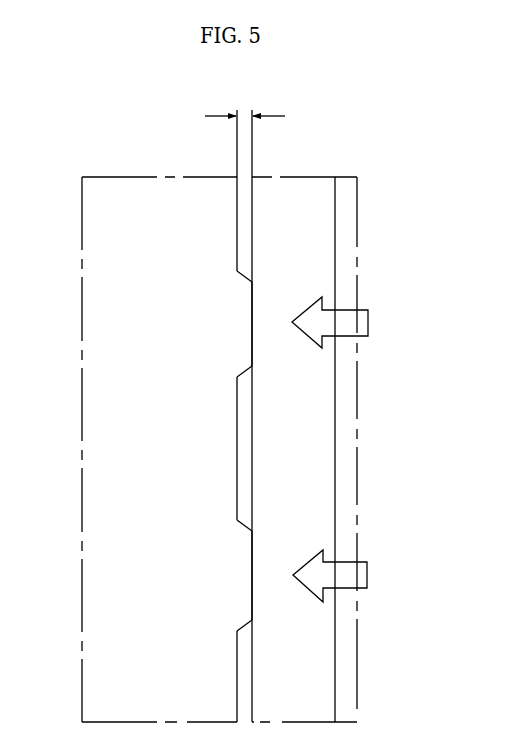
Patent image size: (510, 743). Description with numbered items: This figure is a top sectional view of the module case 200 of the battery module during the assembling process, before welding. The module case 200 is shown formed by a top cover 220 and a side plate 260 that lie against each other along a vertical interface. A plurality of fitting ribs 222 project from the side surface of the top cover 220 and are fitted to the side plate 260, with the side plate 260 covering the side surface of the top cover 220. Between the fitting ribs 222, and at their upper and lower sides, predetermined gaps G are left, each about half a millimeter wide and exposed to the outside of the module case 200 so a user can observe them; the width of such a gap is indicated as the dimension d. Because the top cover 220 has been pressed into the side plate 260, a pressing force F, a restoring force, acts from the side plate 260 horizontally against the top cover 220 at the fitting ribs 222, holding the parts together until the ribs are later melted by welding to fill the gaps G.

The module case 200 is at (204, 413).
The top cover 220 is at (163, 200).
The side plate 260 is at (293, 200).
The fitting rib 222 is at (245, 310).
The predetermined gap G is at (245, 221).
The pressing force (restoring force) F is at (348, 324).
The gap distance d is at (245, 107).